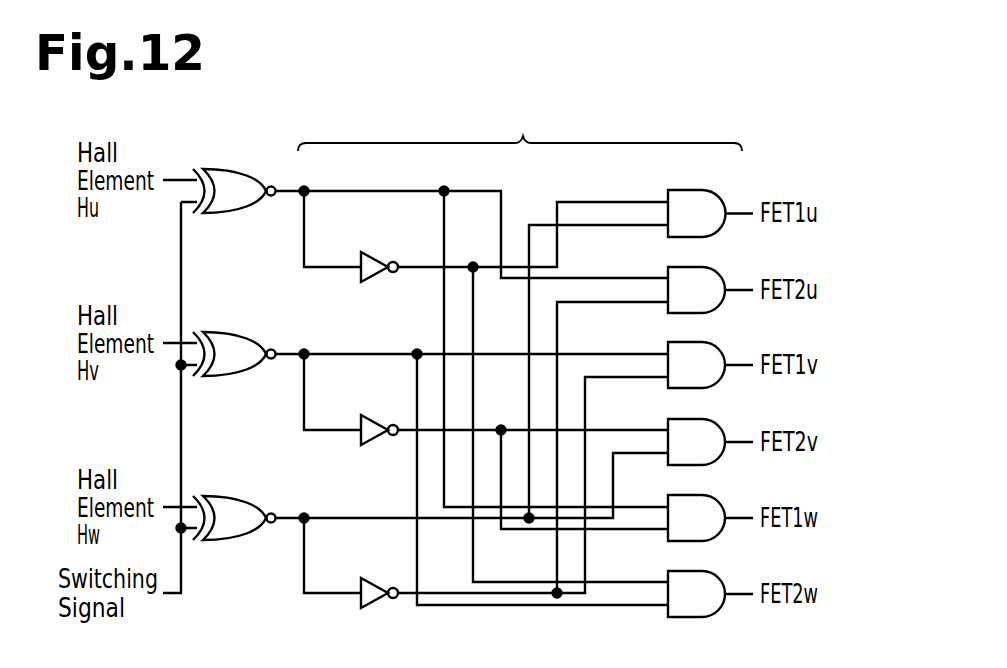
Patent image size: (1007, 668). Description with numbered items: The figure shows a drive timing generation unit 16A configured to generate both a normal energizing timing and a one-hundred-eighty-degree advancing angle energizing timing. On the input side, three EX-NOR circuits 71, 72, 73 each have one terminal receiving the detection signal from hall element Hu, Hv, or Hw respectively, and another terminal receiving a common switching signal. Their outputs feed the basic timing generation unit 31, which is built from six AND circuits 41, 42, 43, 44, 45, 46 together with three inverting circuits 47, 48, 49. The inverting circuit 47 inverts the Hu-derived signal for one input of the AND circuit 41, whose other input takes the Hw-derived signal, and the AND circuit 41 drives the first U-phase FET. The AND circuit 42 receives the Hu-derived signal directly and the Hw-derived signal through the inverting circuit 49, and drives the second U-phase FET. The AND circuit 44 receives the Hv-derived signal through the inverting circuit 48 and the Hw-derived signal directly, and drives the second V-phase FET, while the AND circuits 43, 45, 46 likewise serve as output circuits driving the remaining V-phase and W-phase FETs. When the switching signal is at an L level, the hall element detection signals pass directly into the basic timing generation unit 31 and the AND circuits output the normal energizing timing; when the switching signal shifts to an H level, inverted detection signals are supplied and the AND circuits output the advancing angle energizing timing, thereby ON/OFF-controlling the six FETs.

The drive timing generation unit 16A is at (773, 143).
The basic timing generation unit 31 is at (520, 127).
The AND circuit 41 is at (683, 190).
The AND circuit 42 is at (683, 267).
The AND circuit 43 is at (683, 342).
The AND circuit 44 is at (683, 419).
The AND circuit 45 is at (683, 495).
The AND circuit 46 is at (683, 571).
The inverting circuit 47 is at (368, 252).
The inverting circuit 48 is at (368, 415).
The inverting circuit 49 is at (368, 578).
The EX-NOR circuit 71 is at (220, 169).
The EX-NOR circuit 72 is at (220, 332).
The EX-NOR circuit 73 is at (220, 496).